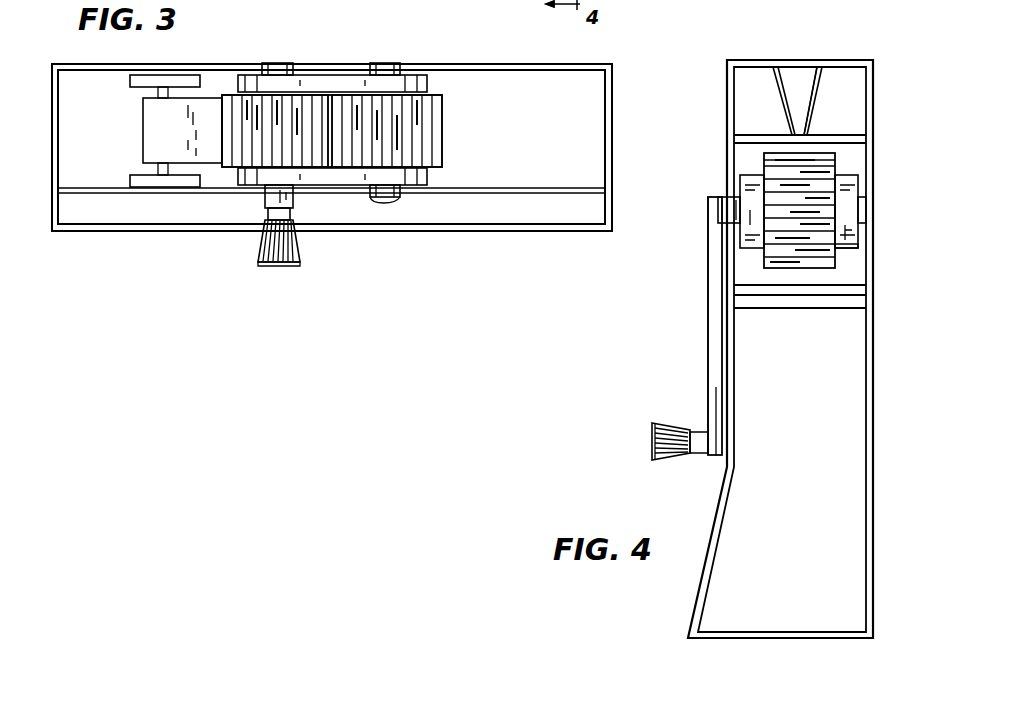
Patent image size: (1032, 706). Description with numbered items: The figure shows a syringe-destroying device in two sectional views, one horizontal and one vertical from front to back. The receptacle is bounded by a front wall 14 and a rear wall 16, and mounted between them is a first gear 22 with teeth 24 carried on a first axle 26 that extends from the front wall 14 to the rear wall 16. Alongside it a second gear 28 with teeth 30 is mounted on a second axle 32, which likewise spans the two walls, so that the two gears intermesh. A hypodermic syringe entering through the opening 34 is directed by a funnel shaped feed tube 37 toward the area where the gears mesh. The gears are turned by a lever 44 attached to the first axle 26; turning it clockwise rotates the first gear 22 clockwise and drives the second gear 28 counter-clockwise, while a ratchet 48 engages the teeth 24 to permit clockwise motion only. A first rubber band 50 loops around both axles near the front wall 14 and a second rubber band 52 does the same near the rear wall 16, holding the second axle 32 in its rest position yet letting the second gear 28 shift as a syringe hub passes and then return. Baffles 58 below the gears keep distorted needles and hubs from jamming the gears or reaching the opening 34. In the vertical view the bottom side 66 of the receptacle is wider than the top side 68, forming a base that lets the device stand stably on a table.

In FIG. 3, the front wall 14 is at (510, 231).
In FIG. 4, the front wall 14 is at (735, 357).
In FIG. 3, the rear wall 16 is at (440, 64).
In FIG. 4, the rear wall 16 is at (875, 380).
In FIG. 3, the first gear 22 is at (235, 163).
In FIG. 3, the teeth 24 is at (240, 128).
In FIG. 3, the first axle 26 is at (283, 63).
In FIG. 3, the second gear 28 is at (445, 126).
In FIG. 4, the second gear 28 is at (840, 158).
In FIG. 3, the teeth 30 is at (412, 108).
In FIG. 4, the teeth 30 is at (786, 178).
In FIG. 3, the second axle 32 is at (400, 193).
In FIG. 4, the second axle 32 is at (866, 208).
In FIG. 4, the opening 34 is at (797, 60).
In FIG. 4, the funnel shaped feed tube 37 is at (818, 90).
In FIG. 4, the lever 44 is at (708, 322).
In FIG. 3, the ratchet 48 is at (162, 134).
In FIG. 3, the first rubber band 50 is at (335, 178).
In FIG. 4, the first rubber band 50 is at (742, 232).
In FIG. 3, the second rubber band 52 is at (333, 78).
In FIG. 4, the second rubber band 52 is at (848, 250).
In FIG. 4, the baffles 58 is at (782, 296).
In FIG. 4, the bottom side 66 is at (734, 638).
In FIG. 4, the top side 68 is at (758, 60).